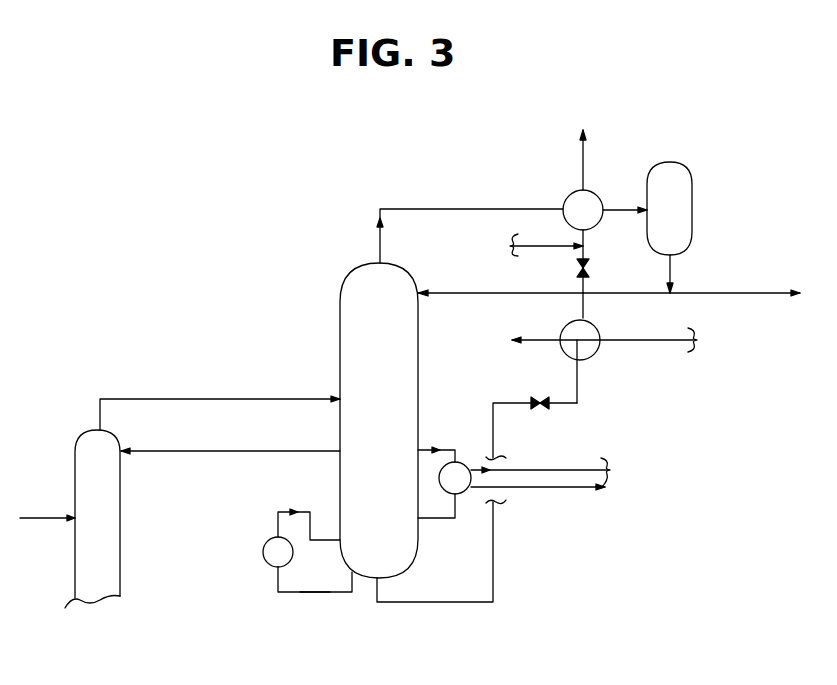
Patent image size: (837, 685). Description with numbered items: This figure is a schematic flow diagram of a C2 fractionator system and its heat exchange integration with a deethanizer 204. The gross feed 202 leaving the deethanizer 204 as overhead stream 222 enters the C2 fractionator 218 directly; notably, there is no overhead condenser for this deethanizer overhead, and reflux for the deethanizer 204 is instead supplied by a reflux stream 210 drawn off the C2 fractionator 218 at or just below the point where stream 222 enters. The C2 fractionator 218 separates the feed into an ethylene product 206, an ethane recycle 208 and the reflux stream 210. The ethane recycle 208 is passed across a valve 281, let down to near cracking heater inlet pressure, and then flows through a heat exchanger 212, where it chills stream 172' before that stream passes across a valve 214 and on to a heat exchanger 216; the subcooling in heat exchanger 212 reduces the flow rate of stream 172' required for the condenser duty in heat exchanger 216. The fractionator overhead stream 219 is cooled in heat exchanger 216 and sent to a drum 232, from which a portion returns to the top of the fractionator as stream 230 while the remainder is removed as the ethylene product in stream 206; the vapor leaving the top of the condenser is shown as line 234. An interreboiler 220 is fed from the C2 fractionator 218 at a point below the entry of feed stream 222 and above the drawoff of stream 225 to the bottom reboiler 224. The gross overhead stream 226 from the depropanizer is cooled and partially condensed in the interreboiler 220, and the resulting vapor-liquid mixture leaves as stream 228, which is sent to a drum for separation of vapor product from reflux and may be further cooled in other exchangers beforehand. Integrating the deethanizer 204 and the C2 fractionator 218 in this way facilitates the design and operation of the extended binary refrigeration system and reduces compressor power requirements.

The gross feed 202 is at (42, 518).
The deethanizer 204 is at (92, 519).
The ethylene product 206 is at (756, 293).
The ethane recycle 208 is at (440, 603).
The reflux stream 210 is at (228, 452).
The heat exchanger 212 is at (600, 326).
The valve 214 is at (577, 268).
The heat exchanger 216 is at (598, 198).
The C2 fractionator 218 is at (379, 420).
The stream 219 is at (449, 209).
The interreboiler 220 is at (470, 462).
The overhead stream 222 is at (172, 399).
The bottom reboiler 224 is at (263, 552).
The stream 225 is at (312, 593).
The gross overhead stream 226 is at (570, 470).
The stream 228 is at (570, 488).
The stream 230 is at (478, 294).
The drum 232 is at (647, 227).
The overhead product line 234 is at (583, 176).
The valve 281 is at (538, 396).
The stream 172' is at (661, 363).